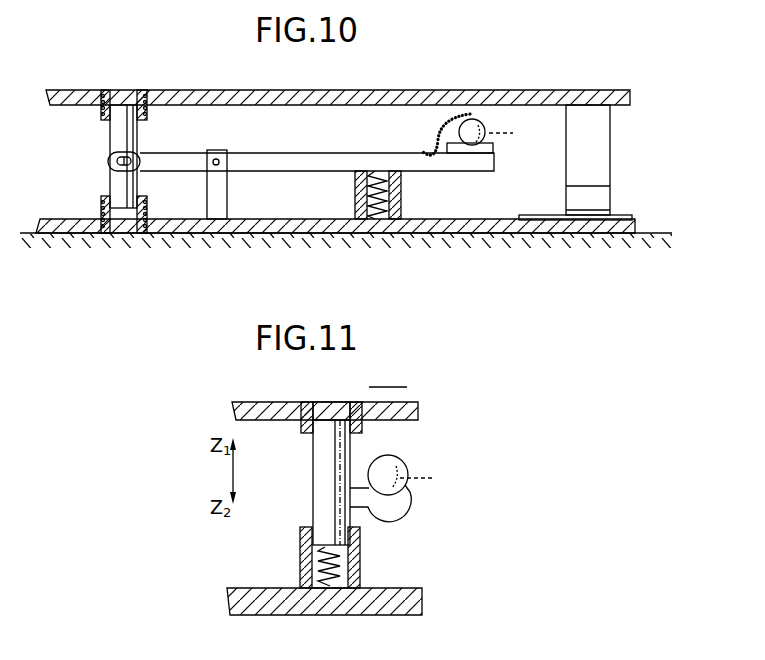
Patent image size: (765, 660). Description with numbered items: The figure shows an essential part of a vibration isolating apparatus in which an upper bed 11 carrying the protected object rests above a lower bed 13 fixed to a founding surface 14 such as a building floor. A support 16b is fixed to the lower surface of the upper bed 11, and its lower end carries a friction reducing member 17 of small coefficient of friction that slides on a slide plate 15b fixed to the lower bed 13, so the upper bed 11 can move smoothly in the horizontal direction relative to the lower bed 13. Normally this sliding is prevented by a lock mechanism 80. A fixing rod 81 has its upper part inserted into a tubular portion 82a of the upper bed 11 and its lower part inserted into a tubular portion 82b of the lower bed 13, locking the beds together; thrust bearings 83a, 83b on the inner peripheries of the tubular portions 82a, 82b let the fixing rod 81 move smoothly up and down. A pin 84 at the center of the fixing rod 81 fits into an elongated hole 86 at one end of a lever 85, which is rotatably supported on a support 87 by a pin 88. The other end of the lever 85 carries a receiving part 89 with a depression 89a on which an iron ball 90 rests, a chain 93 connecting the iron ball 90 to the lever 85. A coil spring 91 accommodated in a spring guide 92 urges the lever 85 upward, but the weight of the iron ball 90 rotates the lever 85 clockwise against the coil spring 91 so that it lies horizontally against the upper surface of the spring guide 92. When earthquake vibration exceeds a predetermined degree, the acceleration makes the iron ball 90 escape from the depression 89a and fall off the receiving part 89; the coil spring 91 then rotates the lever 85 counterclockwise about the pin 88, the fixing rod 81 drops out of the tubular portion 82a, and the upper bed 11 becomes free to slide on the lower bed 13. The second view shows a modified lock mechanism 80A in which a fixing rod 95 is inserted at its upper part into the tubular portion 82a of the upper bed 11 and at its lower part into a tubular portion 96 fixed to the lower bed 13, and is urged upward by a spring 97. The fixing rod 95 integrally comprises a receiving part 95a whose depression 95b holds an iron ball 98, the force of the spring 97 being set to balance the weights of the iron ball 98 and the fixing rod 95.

In FIG. 10, the upper bed 11 is at (390, 92).
In FIG. 11, the upper bed 11 is at (276, 401).
In FIG. 10, the lower bed 13 is at (323, 234).
In FIG. 11, the lower bed 13 is at (362, 615).
In FIG. 10, the founding surface 14 is at (650, 233).
In FIG. 10, the slide plate 15b is at (592, 234).
In FIG. 10, the support 16b is at (603, 150).
In FIG. 10, the friction reducing member 17 is at (565, 214).
In FIG. 10, the lock mechanism 80 is at (307, 164).
In FIG. 11, the lock mechanism 80A is at (388, 376).
In FIG. 10, the fixing rod 81 is at (111, 182).
In FIG. 10, the tubular portion 82a is at (151, 112).
In FIG. 11, the tubular portion 82a is at (299, 428).
In FIG. 10, the tubular portion 82b is at (149, 206).
In FIG. 10, the thrust bearing 83a is at (135, 91).
In FIG. 10, the thrust bearing 83b is at (107, 228).
In FIG. 10, the pin 84 is at (123, 160).
In FIG. 10, the lever 85 is at (339, 157).
In FIG. 10, the elongated hole 86 is at (110, 157).
In FIG. 10, the support 87 is at (223, 187).
In FIG. 10, the pin 88 is at (217, 153).
In FIG. 10, the receiving part 89 is at (494, 155).
In FIG. 10, the depression 89a is at (521, 136).
In FIG. 10, the iron ball 90 is at (481, 114).
In FIG. 10, the coil spring 91 is at (359, 197).
In FIG. 10, the spring guide 92 is at (402, 197).
In FIG. 10, the chain 93 is at (443, 127).
In FIG. 11, the fixing rod 95 is at (312, 484).
In FIG. 11, the receiving part 95a is at (401, 514).
In FIG. 11, the depression 95b is at (437, 480).
In FIG. 11, the tubular portion 96 is at (300, 541).
In FIG. 11, the spring 97 is at (360, 563).
In FIG. 11, the iron ball 98 is at (403, 463).